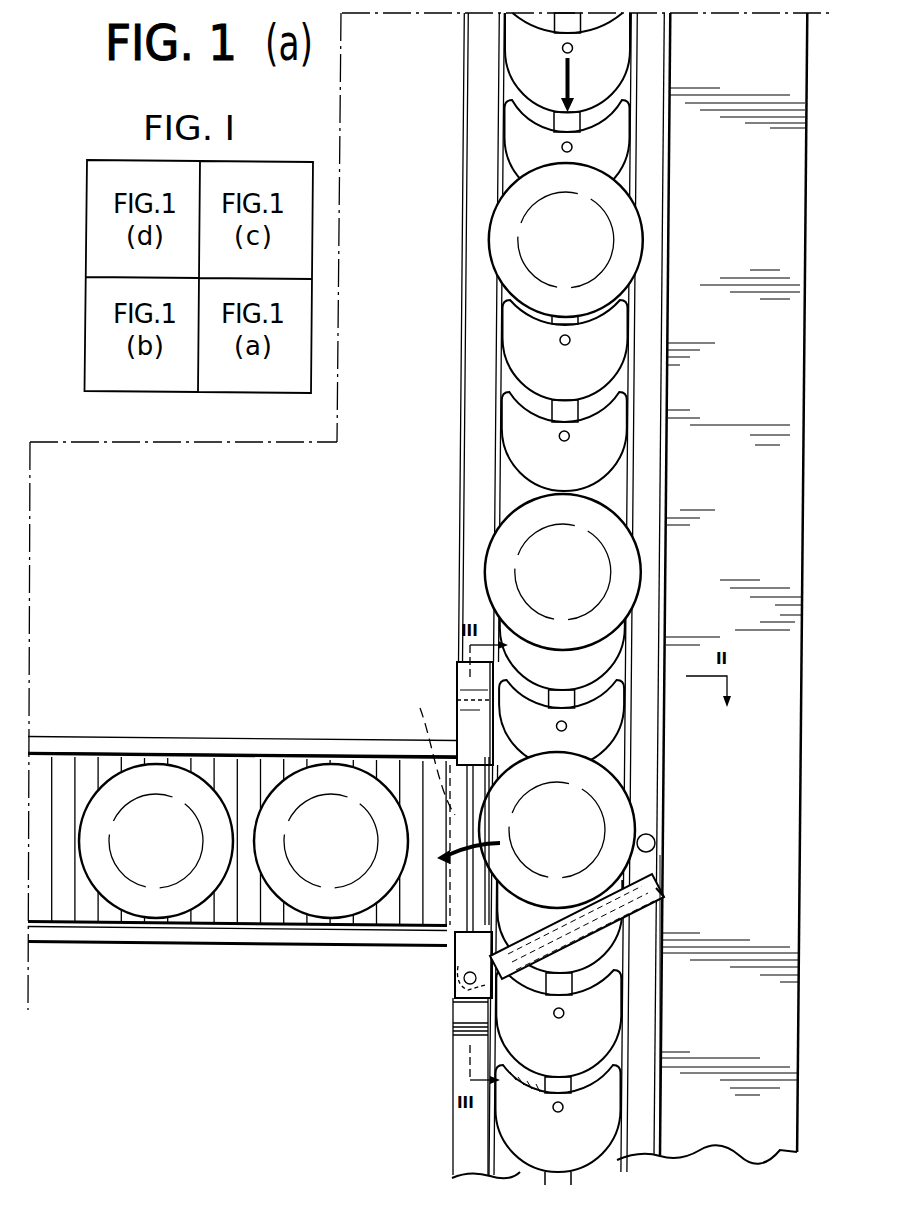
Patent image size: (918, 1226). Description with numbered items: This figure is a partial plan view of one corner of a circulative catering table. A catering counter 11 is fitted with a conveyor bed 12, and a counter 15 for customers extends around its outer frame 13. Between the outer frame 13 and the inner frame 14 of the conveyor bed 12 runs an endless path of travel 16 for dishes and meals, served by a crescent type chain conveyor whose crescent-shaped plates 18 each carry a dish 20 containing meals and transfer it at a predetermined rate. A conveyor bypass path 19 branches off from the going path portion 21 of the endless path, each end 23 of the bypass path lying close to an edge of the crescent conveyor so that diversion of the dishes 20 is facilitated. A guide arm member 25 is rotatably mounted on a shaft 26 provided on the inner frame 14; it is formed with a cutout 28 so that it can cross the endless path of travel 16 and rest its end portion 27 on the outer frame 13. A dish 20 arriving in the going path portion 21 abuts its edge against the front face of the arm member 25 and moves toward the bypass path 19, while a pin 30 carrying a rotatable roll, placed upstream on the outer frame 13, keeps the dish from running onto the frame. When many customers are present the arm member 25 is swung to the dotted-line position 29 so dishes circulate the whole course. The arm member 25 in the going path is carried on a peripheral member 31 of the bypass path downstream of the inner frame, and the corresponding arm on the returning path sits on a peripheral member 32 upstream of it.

The catering counter 11 is at (805, 388).
The conveyor bed 12 is at (675, 225).
The outer frame 13 is at (655, 103).
The inner frame 14 is at (478, 87).
The counter 15 is at (712, 1085).
The endless path of travel 16 is at (571, 70).
The crescent-shaped plate 18 is at (602, 452).
The conveyor bypass path 19 is at (248, 910).
The dish 20 is at (342, 775).
The going path portion 21 is at (642, 305).
The end of the bypass path of travel 23 is at (500, 880).
The guide arm member 25 is at (604, 931).
The shaft 26 is at (463, 978).
The end portion of the arm member 27 is at (677, 868).
The cutout 28 is at (663, 897).
The position of the arm member 29 is at (429, 749).
The pin 30 is at (650, 836).
The peripheral member of the bypass path 31 is at (456, 962).
The peripheral member of the bypass path 32 is at (476, 724).